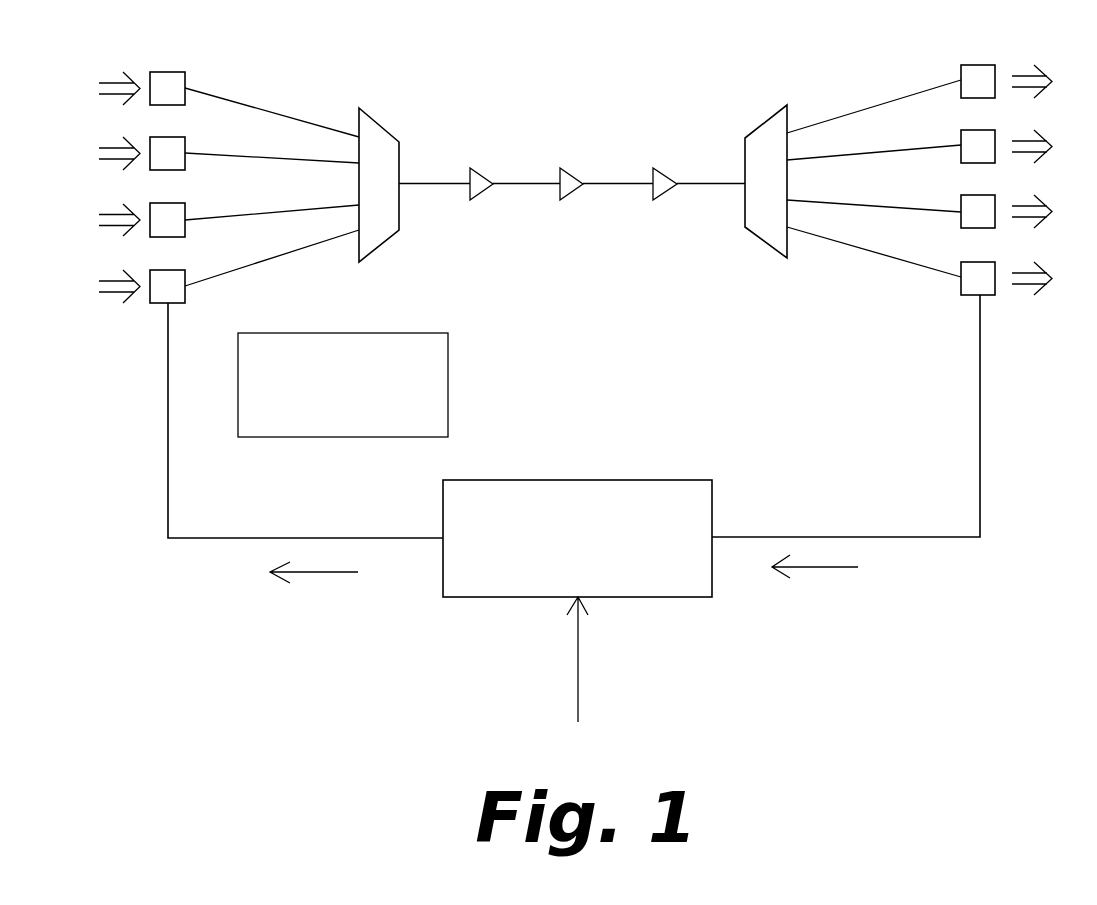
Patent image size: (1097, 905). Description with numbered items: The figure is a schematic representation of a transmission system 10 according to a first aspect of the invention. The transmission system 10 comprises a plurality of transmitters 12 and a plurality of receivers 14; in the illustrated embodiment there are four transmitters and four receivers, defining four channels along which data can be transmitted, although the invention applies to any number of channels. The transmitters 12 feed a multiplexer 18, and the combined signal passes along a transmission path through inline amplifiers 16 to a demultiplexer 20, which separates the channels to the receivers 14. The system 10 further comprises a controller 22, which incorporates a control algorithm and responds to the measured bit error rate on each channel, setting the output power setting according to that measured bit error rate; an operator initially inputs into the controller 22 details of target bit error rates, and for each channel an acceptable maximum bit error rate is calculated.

The transmission system 10 is at (173, 677).
The transmitters 12 is at (168, 70).
The receivers 14 is at (970, 60).
The inline amplifiers 16 is at (482, 173).
The multiplexer 18 is at (377, 250).
The demultiplexer 20 is at (768, 245).
The controller 22 is at (502, 478).